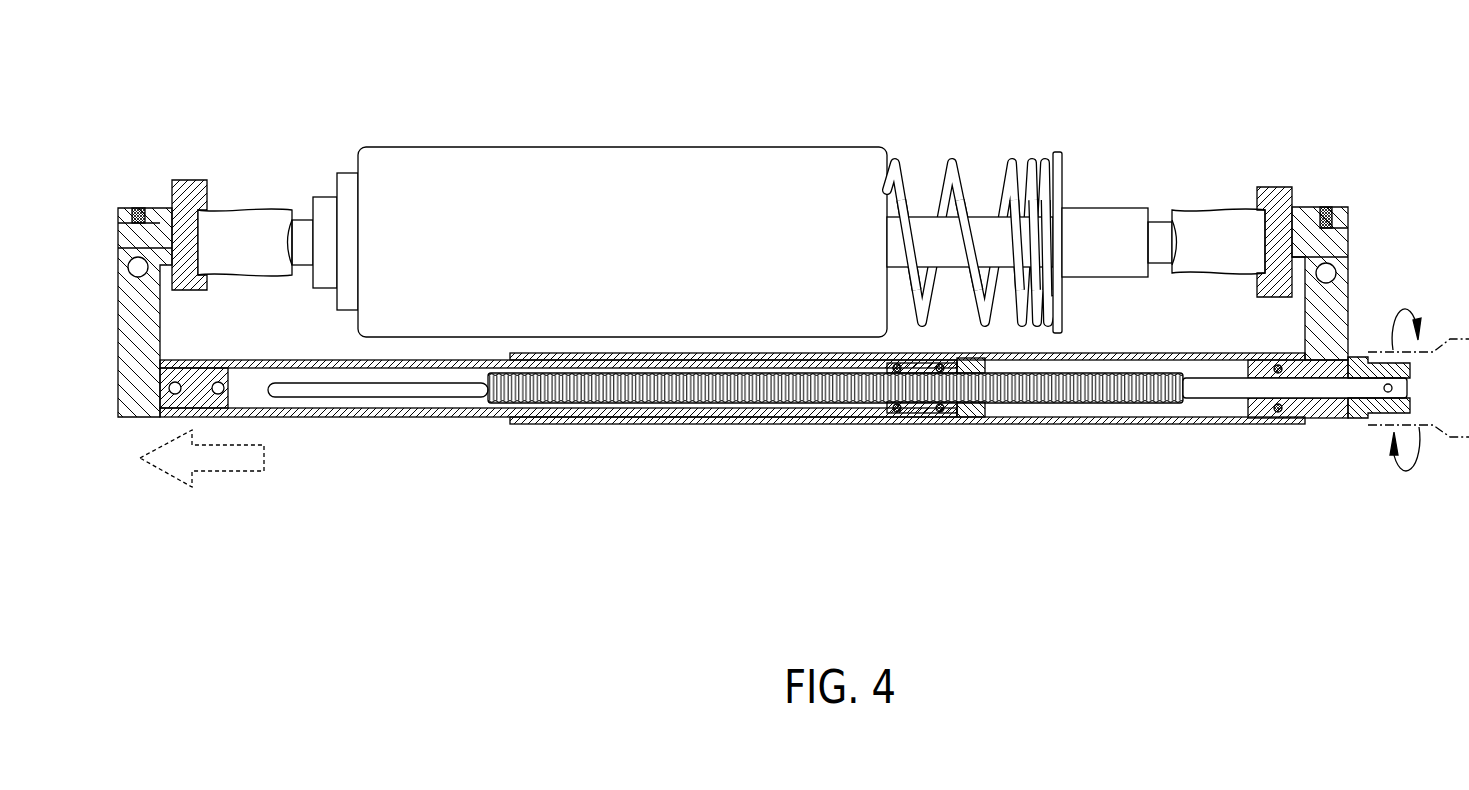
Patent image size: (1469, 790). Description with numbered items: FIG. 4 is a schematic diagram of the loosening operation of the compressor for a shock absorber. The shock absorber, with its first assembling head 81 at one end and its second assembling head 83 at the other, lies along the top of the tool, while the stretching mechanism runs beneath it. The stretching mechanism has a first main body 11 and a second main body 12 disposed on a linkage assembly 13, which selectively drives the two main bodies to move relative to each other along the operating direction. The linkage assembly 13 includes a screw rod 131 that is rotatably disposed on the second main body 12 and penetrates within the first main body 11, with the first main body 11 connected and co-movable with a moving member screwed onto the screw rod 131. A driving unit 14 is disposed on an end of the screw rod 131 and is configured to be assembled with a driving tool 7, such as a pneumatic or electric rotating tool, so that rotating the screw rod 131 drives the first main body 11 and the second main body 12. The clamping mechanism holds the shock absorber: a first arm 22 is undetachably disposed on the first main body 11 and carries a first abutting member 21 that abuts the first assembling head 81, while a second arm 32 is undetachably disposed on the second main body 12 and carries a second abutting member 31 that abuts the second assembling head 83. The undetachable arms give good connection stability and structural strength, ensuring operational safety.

The driving tool 7 is at (1450, 432).
The first main body 11 is at (380, 417).
The second main body 12 is at (1120, 425).
The linkage assembly 13 is at (1004, 424).
The screw rod 131 is at (643, 390).
The driving unit 14 is at (1358, 357).
The first abutting member 21 is at (190, 160).
The first arm 22 is at (124, 302).
The second abutting member 31 is at (1280, 166).
The second arm 32 is at (1325, 418).
The first assembling head 81 is at (245, 225).
The second assembling head 83 is at (1213, 237).